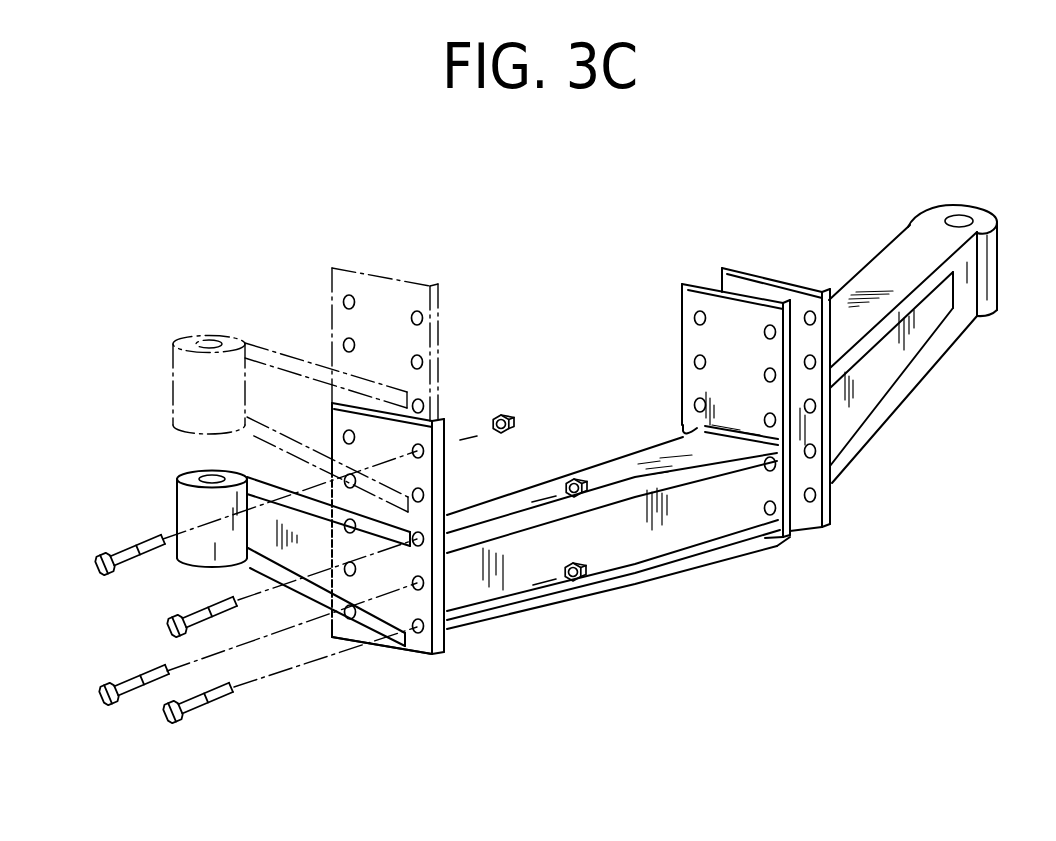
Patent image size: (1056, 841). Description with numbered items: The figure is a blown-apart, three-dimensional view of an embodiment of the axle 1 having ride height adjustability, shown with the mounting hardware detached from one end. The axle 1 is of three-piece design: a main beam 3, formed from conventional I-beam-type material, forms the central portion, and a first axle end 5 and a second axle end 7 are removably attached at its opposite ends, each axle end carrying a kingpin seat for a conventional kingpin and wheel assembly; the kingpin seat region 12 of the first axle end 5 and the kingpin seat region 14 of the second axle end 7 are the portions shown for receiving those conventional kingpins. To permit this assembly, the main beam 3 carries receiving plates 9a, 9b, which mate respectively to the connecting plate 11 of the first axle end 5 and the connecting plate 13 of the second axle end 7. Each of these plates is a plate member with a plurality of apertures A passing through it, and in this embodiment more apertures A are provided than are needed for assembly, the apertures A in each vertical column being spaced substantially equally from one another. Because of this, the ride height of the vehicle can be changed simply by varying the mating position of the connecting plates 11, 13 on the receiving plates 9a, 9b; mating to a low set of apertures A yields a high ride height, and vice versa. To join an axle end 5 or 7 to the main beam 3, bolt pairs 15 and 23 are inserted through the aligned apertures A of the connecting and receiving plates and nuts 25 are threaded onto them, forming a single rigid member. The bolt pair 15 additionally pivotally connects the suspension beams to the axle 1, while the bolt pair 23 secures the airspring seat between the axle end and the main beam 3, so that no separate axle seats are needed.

The axle 1 is at (499, 301).
The main beam 3 is at (668, 546).
The first axle end 5 is at (248, 562).
The second axle end 7 is at (883, 378).
The receiving plate 9a is at (447, 653).
The receiving plate 9b is at (788, 541).
The connecting plate 11 is at (428, 660).
The pivot sleeve 12 is at (180, 484).
The connecting plate 13 is at (813, 523).
The coupler 14 is at (936, 232).
The bolt pair 15 is at (98, 566).
The bolt pair 23 is at (182, 637).
The nuts 25 is at (581, 563).
The apertures A is at (412, 315).